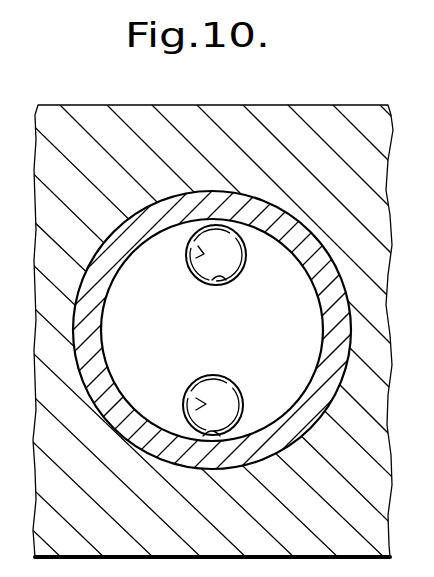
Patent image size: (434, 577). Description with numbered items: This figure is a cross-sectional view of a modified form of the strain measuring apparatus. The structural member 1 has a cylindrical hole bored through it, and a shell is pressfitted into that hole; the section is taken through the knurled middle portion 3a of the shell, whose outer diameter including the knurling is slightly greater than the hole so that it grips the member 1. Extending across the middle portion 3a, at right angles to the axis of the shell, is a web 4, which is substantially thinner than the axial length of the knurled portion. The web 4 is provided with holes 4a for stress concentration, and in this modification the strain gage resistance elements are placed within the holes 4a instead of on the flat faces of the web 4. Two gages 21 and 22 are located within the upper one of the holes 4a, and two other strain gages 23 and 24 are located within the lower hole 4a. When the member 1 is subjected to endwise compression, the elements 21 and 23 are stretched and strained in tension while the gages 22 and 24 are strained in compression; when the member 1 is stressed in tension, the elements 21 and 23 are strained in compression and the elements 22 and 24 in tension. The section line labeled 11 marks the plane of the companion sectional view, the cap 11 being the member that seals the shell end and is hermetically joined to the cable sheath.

The member 1 is at (366, 118).
The middle portion of shell 3a is at (327, 197).
The web 4 is at (272, 323).
The holes 4a is at (226, 232).
The strain gage 21 is at (200, 248).
The strain gage 22 is at (212, 280).
The strain gage 23 is at (196, 399).
The strain gage 24 is at (203, 436).
The cap 11 is at (258, 128).